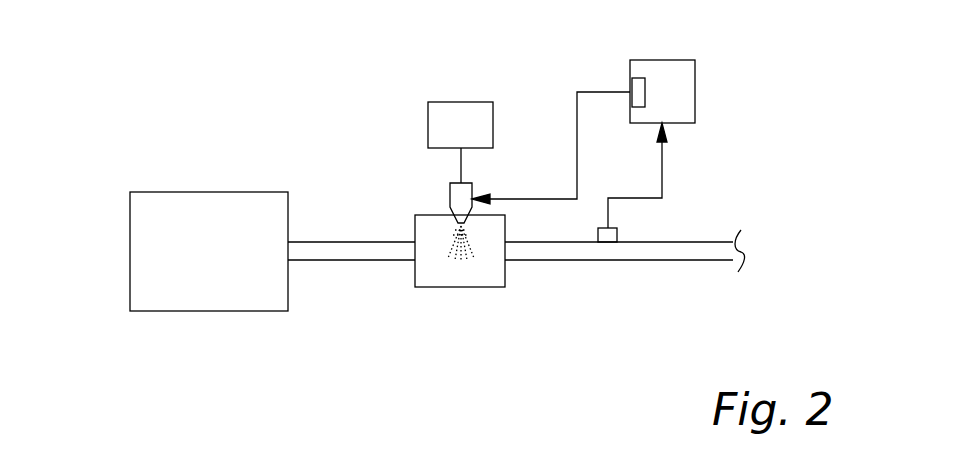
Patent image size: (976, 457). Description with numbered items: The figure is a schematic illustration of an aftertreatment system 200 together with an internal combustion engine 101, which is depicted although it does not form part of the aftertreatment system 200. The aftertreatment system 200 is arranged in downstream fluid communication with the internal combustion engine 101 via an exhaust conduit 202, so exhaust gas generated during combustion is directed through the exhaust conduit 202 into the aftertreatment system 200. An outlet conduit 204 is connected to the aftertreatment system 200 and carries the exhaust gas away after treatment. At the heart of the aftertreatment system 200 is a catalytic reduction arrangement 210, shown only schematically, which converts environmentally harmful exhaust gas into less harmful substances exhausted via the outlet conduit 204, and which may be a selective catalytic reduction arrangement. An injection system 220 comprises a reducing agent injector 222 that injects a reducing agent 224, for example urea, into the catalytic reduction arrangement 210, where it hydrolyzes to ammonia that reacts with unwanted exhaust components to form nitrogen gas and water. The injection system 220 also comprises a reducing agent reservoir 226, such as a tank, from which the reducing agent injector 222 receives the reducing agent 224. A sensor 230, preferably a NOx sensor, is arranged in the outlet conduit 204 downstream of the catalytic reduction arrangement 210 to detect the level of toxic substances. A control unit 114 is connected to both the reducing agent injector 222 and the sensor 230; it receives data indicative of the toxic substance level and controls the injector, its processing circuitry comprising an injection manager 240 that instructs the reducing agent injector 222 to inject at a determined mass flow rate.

The internal combustion engine 101 is at (128, 247).
The aftertreatment system 200 is at (520, 102).
The exhaust conduit 202 is at (369, 240).
The outlet conduit 204 is at (694, 262).
The catalytic reduction arrangement 210 is at (448, 288).
The injection system 220 is at (458, 180).
The reducing agent injector 222 is at (450, 198).
The reducing agent 224 is at (473, 248).
The reducing agent reservoir 226 is at (455, 102).
The sensor 230 is at (617, 236).
The injection manager 240 is at (637, 78).
The control unit 114 is at (637, 105).